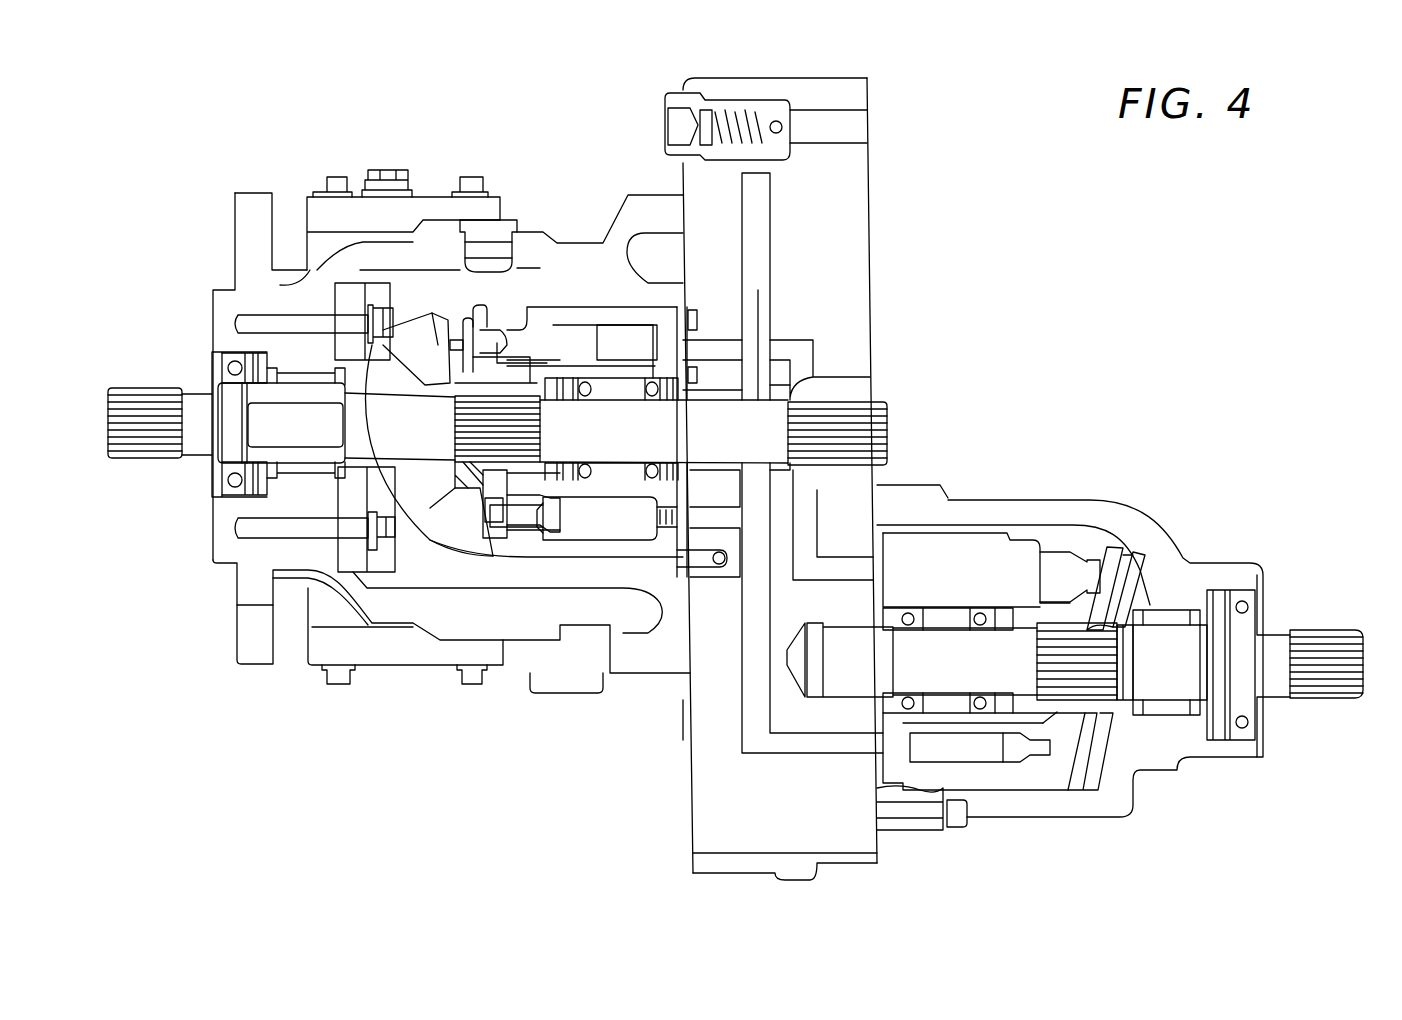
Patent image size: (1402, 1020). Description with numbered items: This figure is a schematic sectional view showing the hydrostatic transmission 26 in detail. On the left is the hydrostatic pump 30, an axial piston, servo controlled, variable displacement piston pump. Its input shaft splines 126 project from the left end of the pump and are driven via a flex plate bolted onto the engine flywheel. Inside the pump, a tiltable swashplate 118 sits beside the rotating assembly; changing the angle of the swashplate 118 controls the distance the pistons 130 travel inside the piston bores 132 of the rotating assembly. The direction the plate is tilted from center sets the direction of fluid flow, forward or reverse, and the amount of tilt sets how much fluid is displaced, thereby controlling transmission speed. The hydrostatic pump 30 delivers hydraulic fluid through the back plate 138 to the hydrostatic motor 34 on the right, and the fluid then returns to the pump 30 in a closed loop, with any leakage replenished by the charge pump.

The hydrostatic transmission 26 is at (883, 232).
The hydrostatic pump 30 is at (443, 185).
The hydrostatic motor 34 is at (1060, 498).
The swashplate 118 is at (425, 328).
The input shaft splines 126 is at (147, 387).
The pistons 130 is at (532, 343).
The piston bores 132 is at (647, 510).
The back plate 138 is at (703, 735).